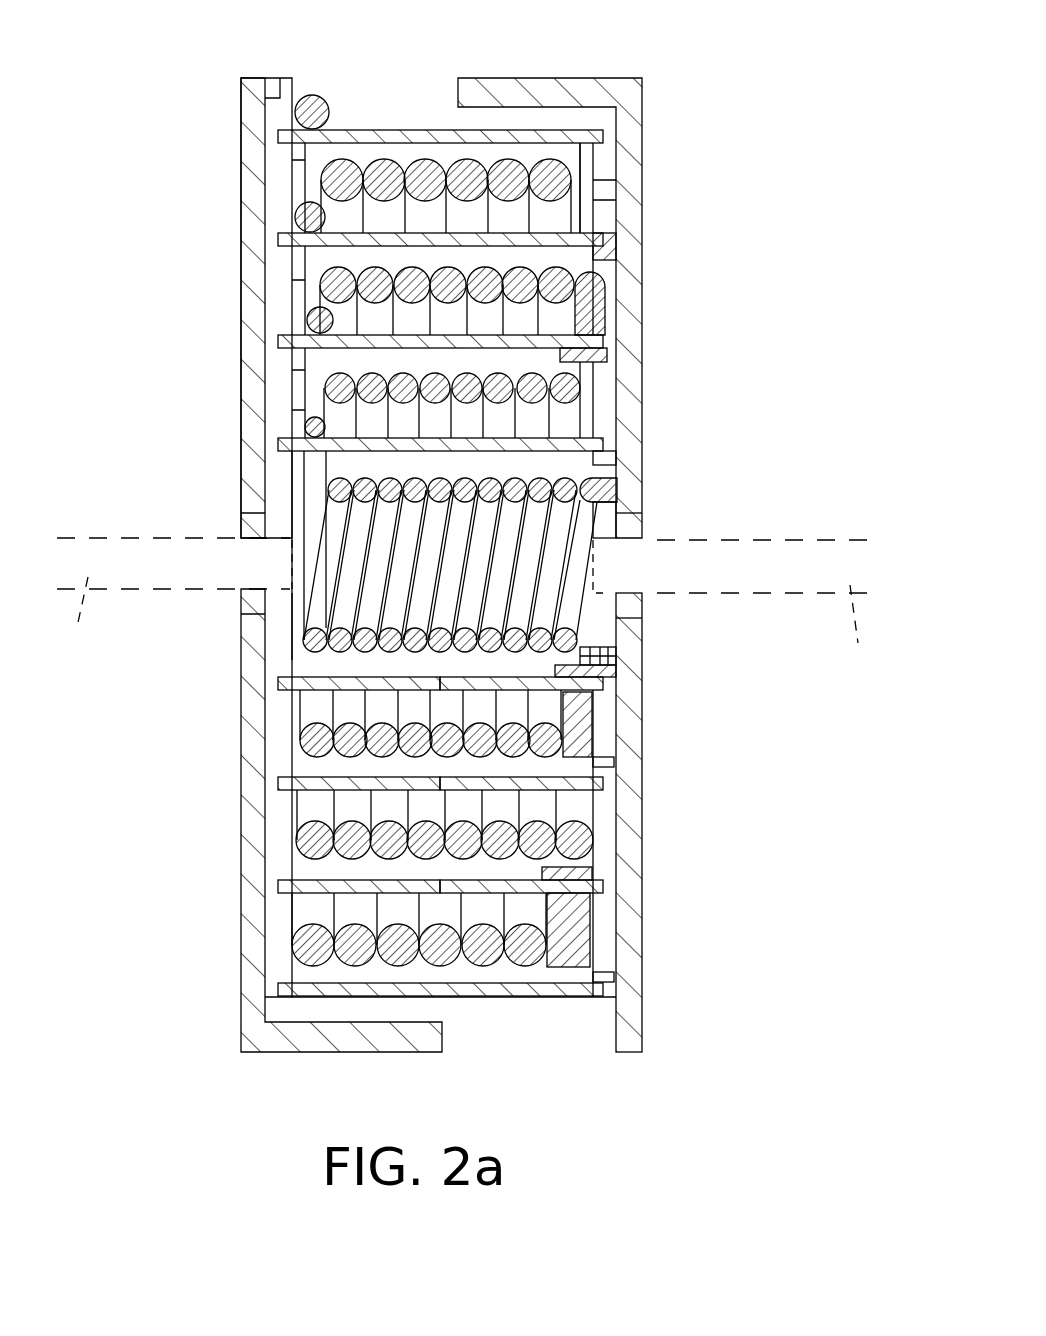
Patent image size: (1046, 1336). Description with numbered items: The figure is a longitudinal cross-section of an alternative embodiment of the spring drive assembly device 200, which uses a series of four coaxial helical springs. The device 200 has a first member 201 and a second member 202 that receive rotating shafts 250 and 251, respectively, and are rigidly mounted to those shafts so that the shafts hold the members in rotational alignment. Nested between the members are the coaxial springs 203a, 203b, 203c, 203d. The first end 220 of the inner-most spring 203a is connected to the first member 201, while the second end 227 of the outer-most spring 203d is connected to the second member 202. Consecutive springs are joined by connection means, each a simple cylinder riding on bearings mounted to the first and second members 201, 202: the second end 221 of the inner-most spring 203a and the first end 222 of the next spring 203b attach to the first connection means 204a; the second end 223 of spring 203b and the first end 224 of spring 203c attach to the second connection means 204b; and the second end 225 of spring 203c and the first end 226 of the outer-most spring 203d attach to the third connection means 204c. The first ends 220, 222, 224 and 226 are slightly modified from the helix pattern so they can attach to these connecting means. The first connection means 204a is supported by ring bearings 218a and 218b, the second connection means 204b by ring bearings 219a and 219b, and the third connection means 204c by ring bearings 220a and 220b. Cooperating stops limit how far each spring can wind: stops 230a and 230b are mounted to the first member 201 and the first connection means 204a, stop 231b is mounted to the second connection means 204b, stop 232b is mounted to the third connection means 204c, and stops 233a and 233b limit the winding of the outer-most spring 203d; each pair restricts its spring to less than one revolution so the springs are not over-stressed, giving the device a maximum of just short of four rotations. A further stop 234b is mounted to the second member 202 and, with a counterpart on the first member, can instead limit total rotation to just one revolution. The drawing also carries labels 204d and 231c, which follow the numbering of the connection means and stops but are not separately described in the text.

The device 200 is at (745, 63).
The first member 201 is at (526, 78).
The second member 202 is at (262, 122).
The inner-most spring 203a is at (582, 527).
The spring 203b is at (572, 423).
The spring 203c is at (565, 320).
The outer-most spring 203d is at (560, 216).
The first connection means 204a is at (282, 444).
The second connection means 204b is at (282, 341).
The third connection means 204c is at (282, 240).
The raceway plate 204d is at (282, 137).
The ring bearing 218a is at (600, 688).
The ring bearing 218b is at (275, 683).
The ring bearing 219a is at (598, 784).
The ring bearing 219b is at (275, 785).
The first end 220 is at (600, 486).
The ring bearing 220a is at (600, 873).
The ring bearing 220b is at (275, 880).
The second end 221 is at (306, 428).
The first end 222 is at (592, 732).
The second end 223 is at (310, 316).
The first end 224 is at (590, 292).
The second end 225 is at (298, 210).
The first end 226 is at (630, 945).
The second end 227 is at (316, 96).
The cooperating stop 230a is at (608, 648).
The cooperating stop 230b is at (590, 670).
The cooperating stop 231b is at (296, 370).
The spacer 231c is at (298, 406).
The cooperating stop 232b is at (296, 275).
The cooperating stop 233a is at (593, 190).
The cooperating stop 233b is at (593, 165).
The cooperating stop 234b is at (414, 1048).
The rotating shaft 250 is at (777, 609).
The rotating shaft 251 is at (173, 605).